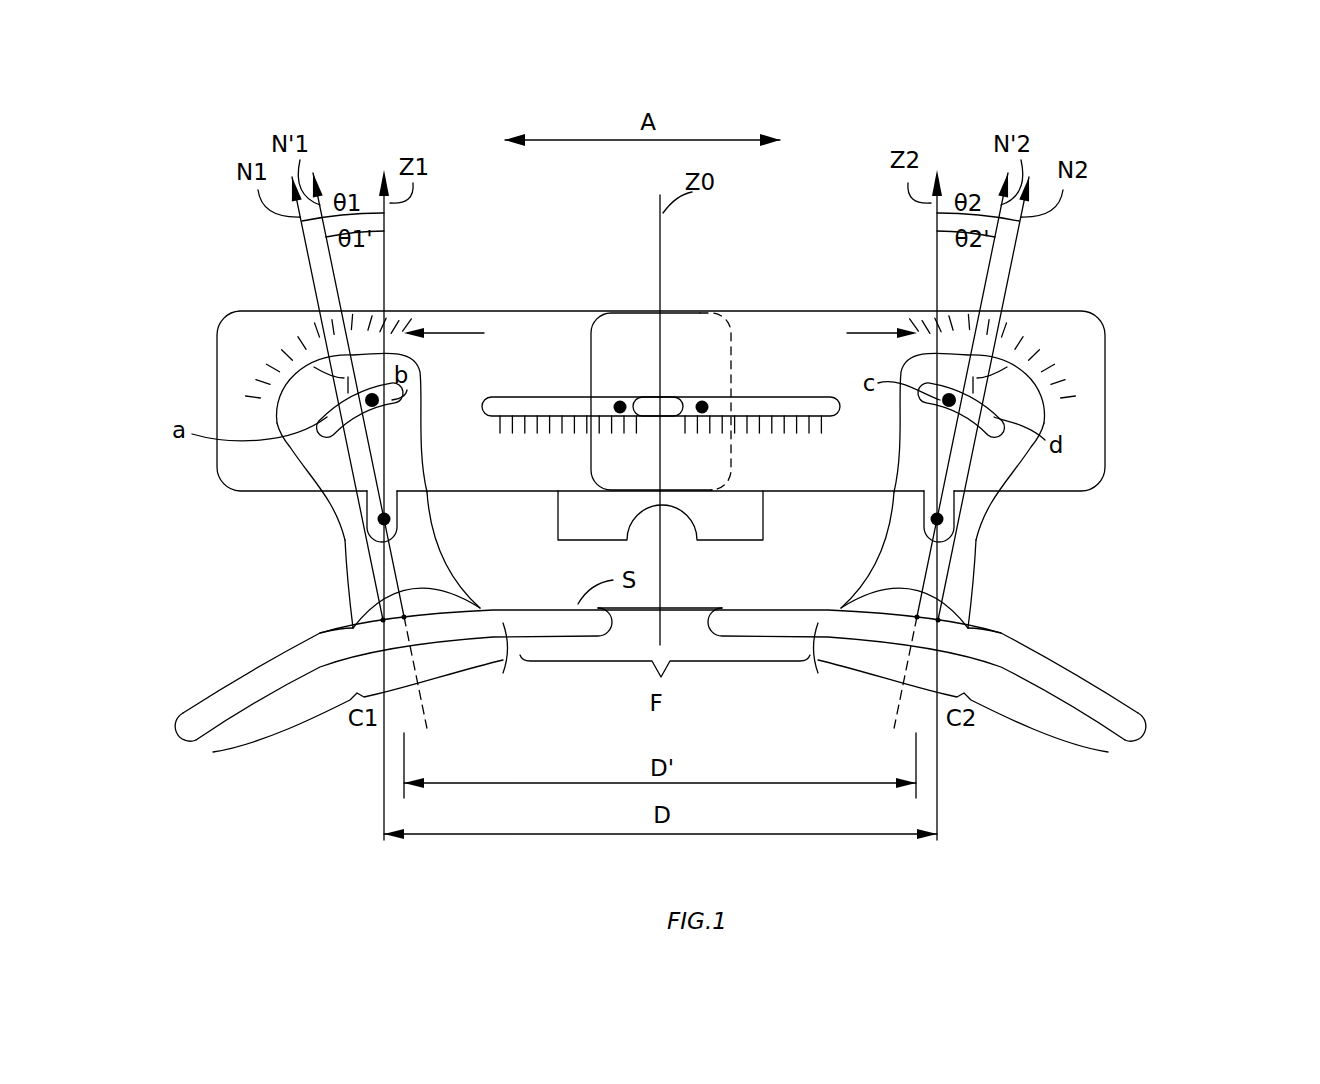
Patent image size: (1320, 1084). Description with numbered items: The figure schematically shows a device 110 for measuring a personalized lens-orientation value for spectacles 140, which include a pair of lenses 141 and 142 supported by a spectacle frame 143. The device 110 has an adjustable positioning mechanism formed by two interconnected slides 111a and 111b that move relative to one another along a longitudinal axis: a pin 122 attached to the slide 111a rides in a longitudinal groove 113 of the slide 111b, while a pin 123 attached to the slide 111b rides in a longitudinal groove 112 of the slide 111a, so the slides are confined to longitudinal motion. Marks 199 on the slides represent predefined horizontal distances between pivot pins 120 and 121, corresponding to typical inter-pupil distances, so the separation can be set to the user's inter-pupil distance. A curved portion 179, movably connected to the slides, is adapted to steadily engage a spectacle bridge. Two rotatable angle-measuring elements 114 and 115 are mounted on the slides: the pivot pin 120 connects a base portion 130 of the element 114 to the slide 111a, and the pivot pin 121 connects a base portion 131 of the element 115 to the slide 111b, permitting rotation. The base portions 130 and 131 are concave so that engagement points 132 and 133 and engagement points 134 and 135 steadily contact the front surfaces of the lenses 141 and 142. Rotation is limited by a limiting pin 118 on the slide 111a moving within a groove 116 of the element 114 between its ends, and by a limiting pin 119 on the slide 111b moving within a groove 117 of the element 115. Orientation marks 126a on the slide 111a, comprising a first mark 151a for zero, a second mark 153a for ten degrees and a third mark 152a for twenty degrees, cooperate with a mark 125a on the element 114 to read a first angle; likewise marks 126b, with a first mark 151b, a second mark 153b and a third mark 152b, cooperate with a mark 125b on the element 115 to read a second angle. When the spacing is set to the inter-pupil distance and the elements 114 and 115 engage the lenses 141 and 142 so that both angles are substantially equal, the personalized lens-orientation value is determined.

The device 110 is at (1128, 265).
The slide 111a is at (567, 320).
The slide 111b is at (833, 323).
The longitudinal groove 112 is at (552, 398).
The longitudinal groove 113 is at (771, 398).
The angle-measuring element 114 is at (277, 423).
The angle-measuring element 115 is at (1023, 397).
The groove 116 is at (322, 437).
The groove 117 is at (998, 435).
The limiting pin 118 is at (362, 378).
The limiting pin 119 is at (962, 380).
The pivot pin 120 is at (393, 520).
The pivot pin 121 is at (946, 518).
The pin 122 is at (702, 400).
The pin 123 is at (620, 400).
The mark 125a is at (308, 353).
The mark 125b is at (1013, 353).
The marks 126a is at (474, 333).
The marks 126b is at (828, 333).
The base portion 130 is at (362, 562).
The base portion 131 is at (950, 597).
The engagement point 132 is at (350, 628).
The engagement point 133 is at (480, 607).
The engagement point 134 is at (842, 608).
The engagement point 135 is at (968, 627).
The spectacles 140 is at (1180, 745).
The lens 141 is at (203, 717).
The lens 142 is at (1113, 710).
The spectacle frame 143 is at (642, 608).
The first mark 151a is at (373, 335).
The third mark 152a is at (396, 335).
The second mark 153a is at (386, 335).
The first mark 151b is at (948, 335).
The third mark 152b is at (963, 335).
The second mark 153b is at (957, 335).
The curved portion 179 is at (765, 520).
The marks 199 is at (498, 420).